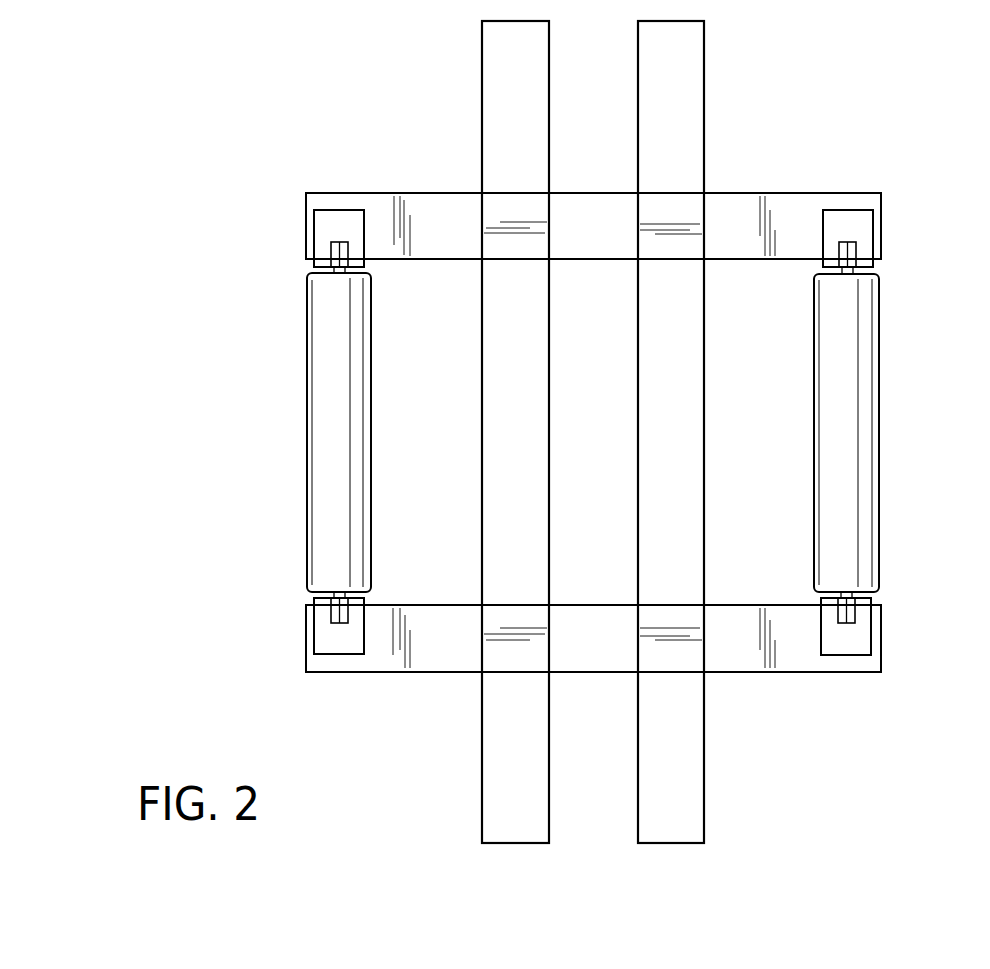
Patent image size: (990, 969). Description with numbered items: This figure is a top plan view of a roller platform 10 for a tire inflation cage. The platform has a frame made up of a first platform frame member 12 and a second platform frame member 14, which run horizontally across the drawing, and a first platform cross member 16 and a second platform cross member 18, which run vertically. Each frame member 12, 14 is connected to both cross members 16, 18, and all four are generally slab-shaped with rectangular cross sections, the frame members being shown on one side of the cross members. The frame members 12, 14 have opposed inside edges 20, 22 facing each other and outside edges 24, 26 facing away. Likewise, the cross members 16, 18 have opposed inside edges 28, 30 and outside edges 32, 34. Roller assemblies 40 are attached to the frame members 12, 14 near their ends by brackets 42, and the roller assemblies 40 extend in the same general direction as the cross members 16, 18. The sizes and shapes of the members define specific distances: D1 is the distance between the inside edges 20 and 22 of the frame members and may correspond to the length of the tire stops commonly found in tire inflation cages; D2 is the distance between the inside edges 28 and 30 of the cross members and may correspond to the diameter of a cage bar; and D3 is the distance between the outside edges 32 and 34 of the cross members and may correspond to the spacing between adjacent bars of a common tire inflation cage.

The roller platform 10 is at (915, 183).
The first platform frame member 12 is at (439, 237).
The second platform frame member 14 is at (429, 649).
The first platform cross member 16 is at (503, 425).
The second platform cross member 18 is at (658, 422).
The inside edge 20 is at (447, 260).
The inside edge 22 is at (453, 605).
The outside edge 24 is at (410, 193).
The outside edge 26 is at (440, 672).
The inside edge 28 is at (638, 698).
The inside edge 30 is at (549, 738).
The outside edge 32 is at (482, 816).
The outside edge 34 is at (704, 727).
The roller assembly 40 is at (302, 413).
The bracket 42 is at (326, 232).
The distance between inside edges of frame members D1 is at (767, 260).
The distance between inside edges of cross members D2 is at (638, 787).
The distance between outside edges of cross members D3 is at (482, 850).